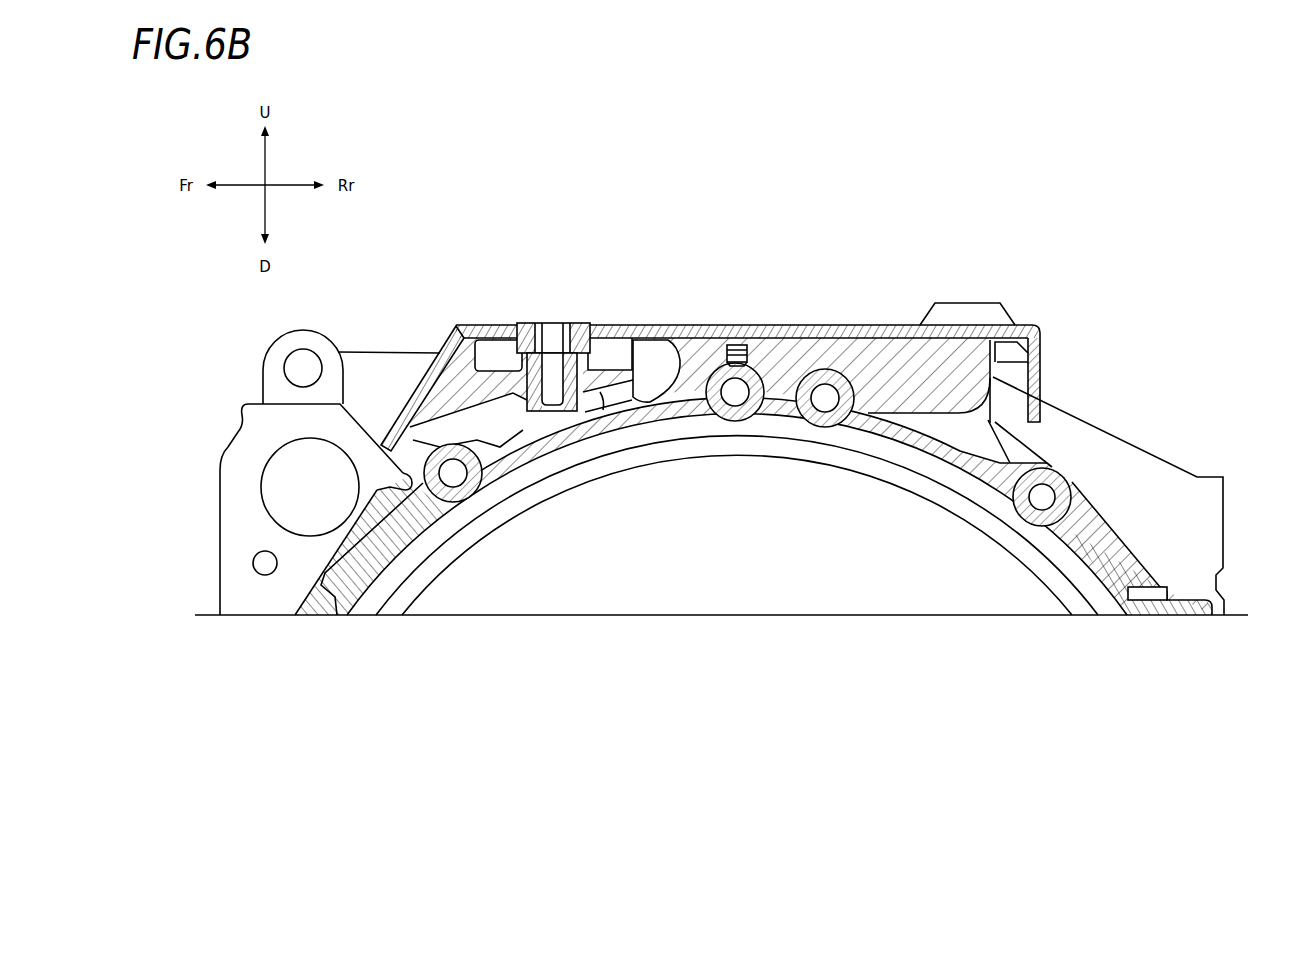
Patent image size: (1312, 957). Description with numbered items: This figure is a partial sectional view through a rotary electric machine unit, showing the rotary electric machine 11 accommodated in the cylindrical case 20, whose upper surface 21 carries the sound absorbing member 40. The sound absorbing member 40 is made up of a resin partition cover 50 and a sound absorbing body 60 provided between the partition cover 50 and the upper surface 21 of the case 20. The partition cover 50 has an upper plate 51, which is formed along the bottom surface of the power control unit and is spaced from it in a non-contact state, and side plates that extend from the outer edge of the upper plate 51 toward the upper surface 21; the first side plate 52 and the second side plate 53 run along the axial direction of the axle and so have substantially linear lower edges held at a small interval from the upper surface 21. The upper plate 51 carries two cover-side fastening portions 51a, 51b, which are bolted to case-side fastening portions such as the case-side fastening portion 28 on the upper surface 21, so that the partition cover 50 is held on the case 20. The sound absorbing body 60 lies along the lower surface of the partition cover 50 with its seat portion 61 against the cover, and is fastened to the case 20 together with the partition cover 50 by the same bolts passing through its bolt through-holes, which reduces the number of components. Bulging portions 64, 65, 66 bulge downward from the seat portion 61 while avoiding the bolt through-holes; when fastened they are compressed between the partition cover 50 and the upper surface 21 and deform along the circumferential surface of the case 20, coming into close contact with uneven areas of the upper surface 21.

The rotary electric machine 11 is at (770, 582).
The case 20 is at (1232, 510).
The upper surface 21 is at (677, 407).
The case-side fastening portion 28 is at (607, 380).
The sound absorbing member 40 is at (825, 320).
The partition cover 50 is at (741, 297).
The upper plate 51 is at (738, 322).
The cover-side fastening portion 51a is at (1017, 313).
The cover-side fastening portion 51b is at (528, 318).
The first side plate 52 is at (1047, 383).
The second side plate 53 is at (407, 390).
The sound absorbing body 60 is at (893, 377).
The seat portion 61 is at (333, 597).
The bulging portion 64 is at (910, 378).
The bulging portion 65 is at (652, 372).
The bulging portion 66 is at (471, 397).